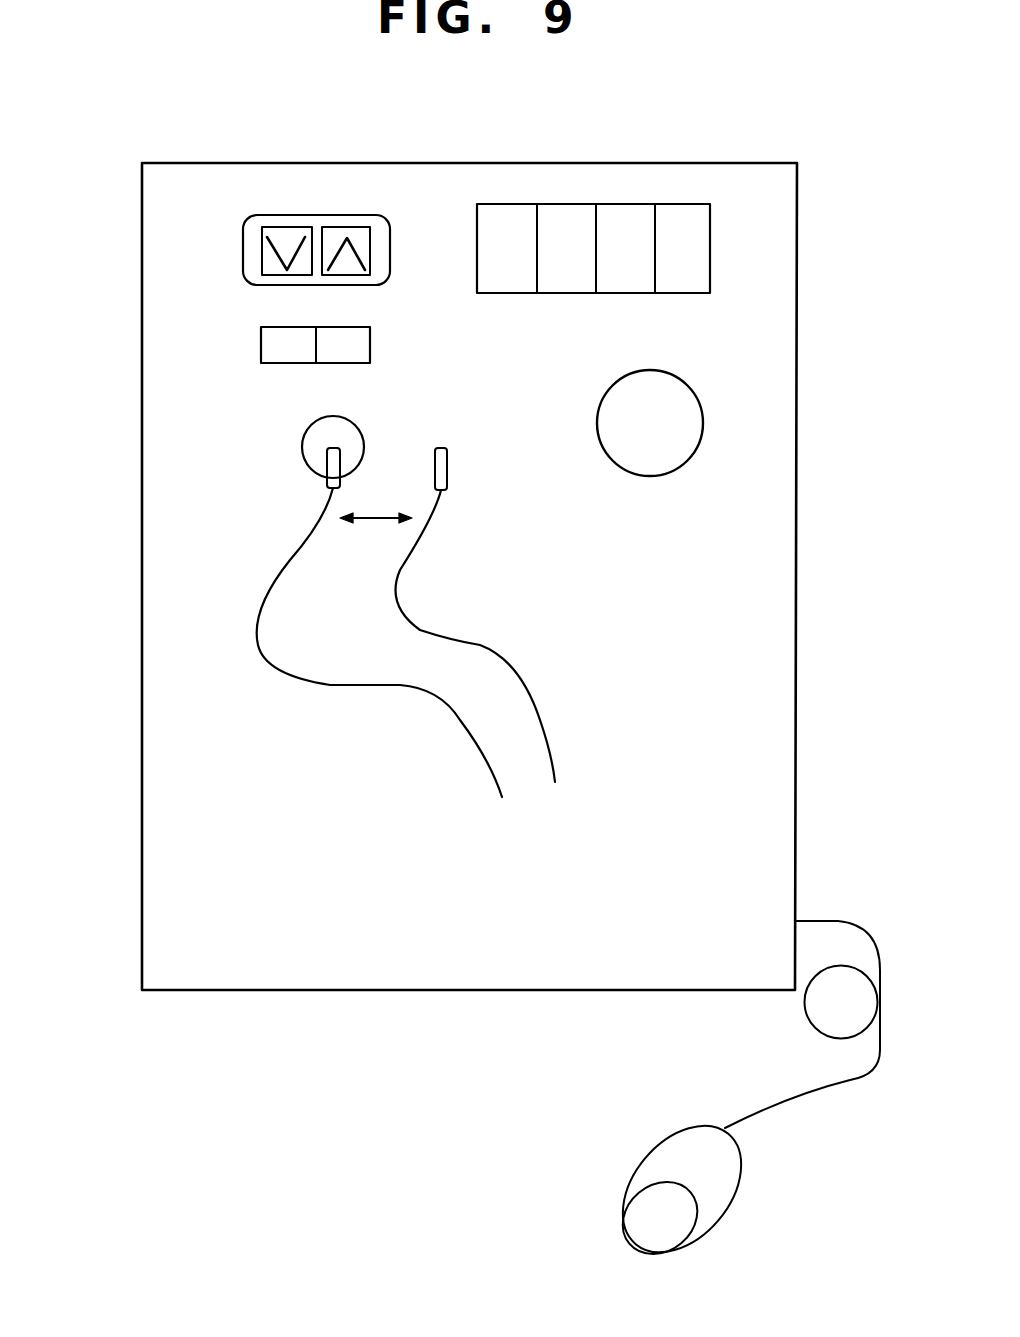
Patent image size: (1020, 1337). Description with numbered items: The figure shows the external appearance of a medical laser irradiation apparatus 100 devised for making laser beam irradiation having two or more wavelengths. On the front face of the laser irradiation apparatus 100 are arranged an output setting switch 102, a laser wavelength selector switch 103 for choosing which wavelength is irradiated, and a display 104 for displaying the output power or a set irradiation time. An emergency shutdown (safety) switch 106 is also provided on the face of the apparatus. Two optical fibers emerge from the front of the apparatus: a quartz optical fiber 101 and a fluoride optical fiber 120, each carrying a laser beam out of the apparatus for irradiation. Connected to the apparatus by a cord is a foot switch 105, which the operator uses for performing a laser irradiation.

The laser irradiation apparatus 100 is at (738, 162).
The quartz optical fiber 101 is at (272, 653).
The output setting switch 102 is at (314, 213).
The laser wavelength selector switch 103 is at (261, 341).
The display 104 is at (585, 204).
The foot switch 105 is at (718, 1225).
The emergency shutdown (safety) switch 106 is at (703, 410).
The fluoride optical fiber 120 is at (455, 636).